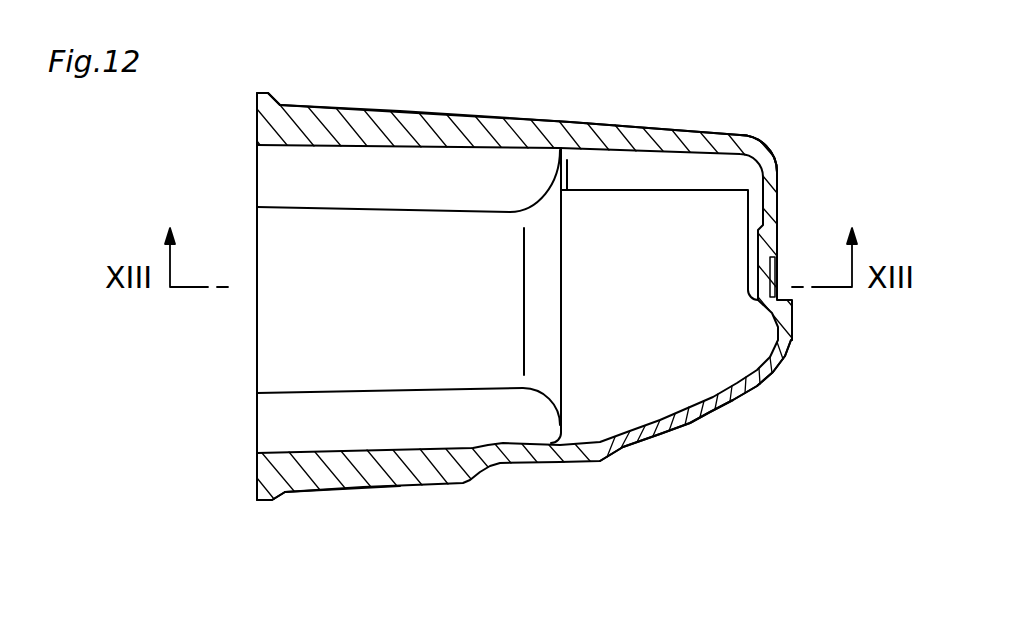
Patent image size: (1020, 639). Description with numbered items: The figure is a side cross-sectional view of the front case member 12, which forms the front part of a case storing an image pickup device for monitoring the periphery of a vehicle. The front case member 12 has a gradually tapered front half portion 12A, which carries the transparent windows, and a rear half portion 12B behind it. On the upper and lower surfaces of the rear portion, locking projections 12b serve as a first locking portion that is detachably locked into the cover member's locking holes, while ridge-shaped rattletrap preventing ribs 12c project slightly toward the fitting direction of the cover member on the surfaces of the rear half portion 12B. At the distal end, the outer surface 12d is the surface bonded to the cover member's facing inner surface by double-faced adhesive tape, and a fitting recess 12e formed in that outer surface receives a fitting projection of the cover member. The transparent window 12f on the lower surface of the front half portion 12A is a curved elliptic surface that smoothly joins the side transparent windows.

The front case member 12 is at (532, 120).
The front half portion 12A is at (702, 132).
The rear half portion 12B is at (453, 115).
The locking projection 12b is at (258, 92).
The rattletrap preventing rib 12c is at (333, 108).
The outer surface of the distal end 12d is at (774, 165).
The fitting recess 12e is at (777, 270).
The transparent window 12f is at (717, 413).